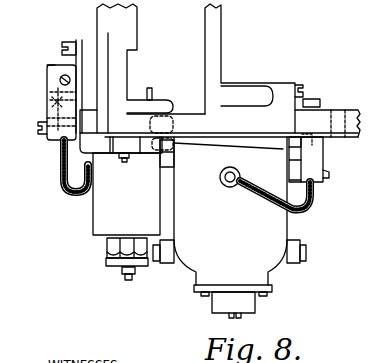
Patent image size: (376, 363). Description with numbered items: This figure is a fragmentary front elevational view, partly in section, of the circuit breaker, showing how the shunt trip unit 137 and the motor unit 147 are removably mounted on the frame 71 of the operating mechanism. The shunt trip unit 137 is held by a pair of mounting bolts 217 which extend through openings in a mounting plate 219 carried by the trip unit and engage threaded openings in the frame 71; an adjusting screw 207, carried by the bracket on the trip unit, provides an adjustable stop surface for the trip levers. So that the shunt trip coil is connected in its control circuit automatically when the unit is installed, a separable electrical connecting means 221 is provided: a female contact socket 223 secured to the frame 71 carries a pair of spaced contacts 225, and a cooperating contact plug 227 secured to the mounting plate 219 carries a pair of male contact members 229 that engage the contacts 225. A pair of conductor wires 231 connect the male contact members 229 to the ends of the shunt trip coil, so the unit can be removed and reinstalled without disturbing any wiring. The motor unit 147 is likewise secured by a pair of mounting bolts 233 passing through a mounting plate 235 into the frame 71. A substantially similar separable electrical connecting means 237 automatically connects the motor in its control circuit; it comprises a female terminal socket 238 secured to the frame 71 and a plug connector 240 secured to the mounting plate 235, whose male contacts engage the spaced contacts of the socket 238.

The frame 71 is at (222, 51).
The shunt trip unit 137 is at (103, 226).
The motor unit 147 is at (279, 223).
The adjusting screw 207 is at (176, 113).
The mounting bolts 217 is at (120, 160).
The mounting plate 219 is at (90, 147).
The separable electrical connecting means 221 is at (32, 91).
The female contact socket 223 is at (55, 64).
The spaced contacts 225 is at (70, 62).
The contact plug 227 is at (50, 140).
The male contact members 229 is at (57, 107).
The conductor wires 231 is at (62, 172).
The mounting bolts 233 is at (237, 148).
The mounting plate 235 is at (268, 133).
The separable electrical connecting means 237 is at (358, 160).
The female terminal socket 238 is at (320, 110).
The plug connector 240 is at (320, 178).